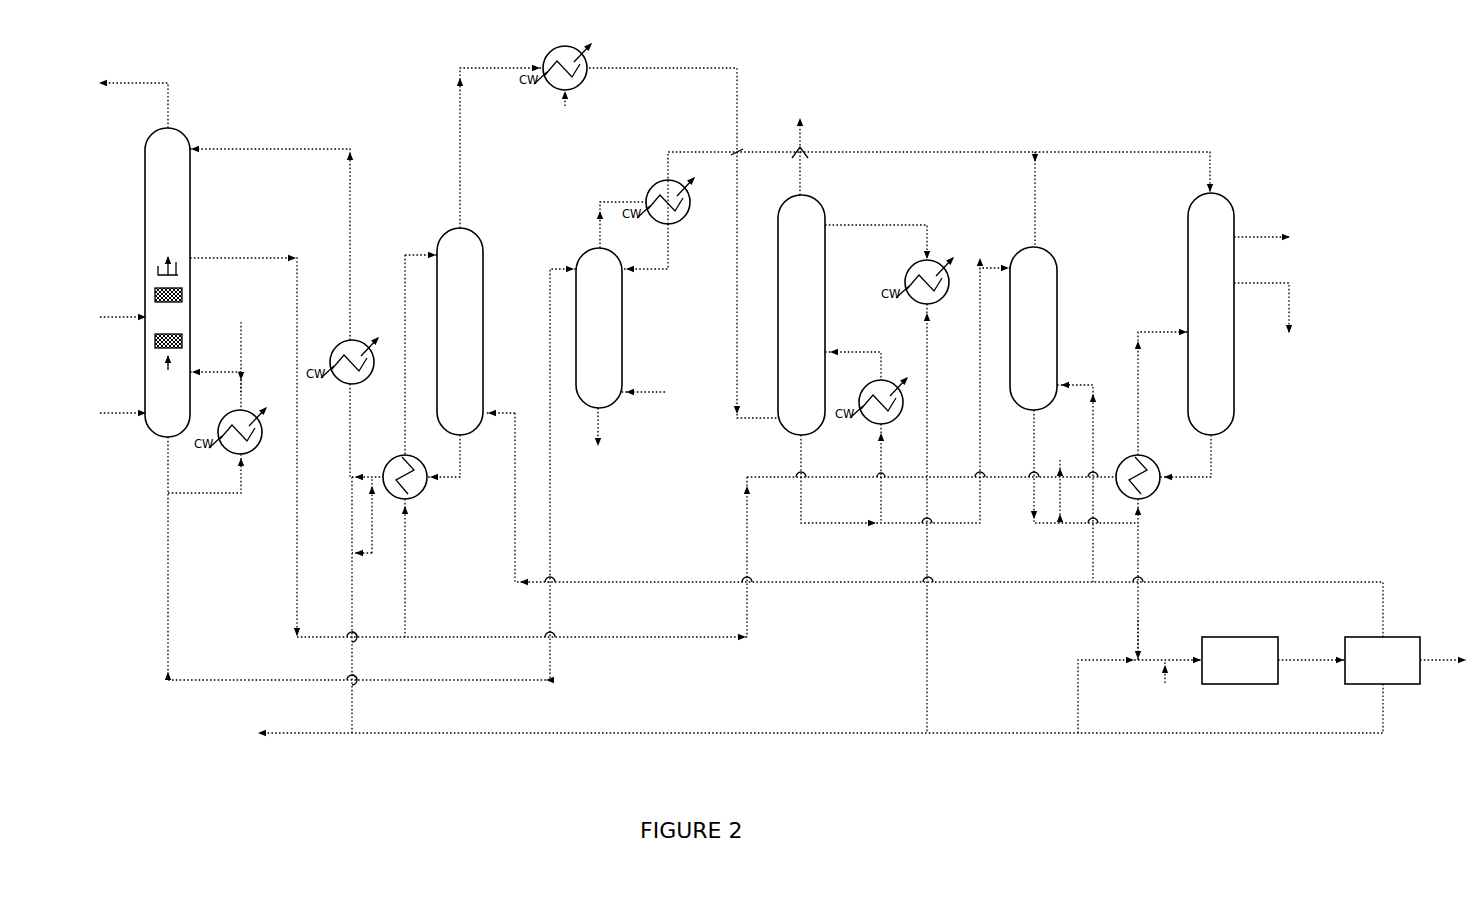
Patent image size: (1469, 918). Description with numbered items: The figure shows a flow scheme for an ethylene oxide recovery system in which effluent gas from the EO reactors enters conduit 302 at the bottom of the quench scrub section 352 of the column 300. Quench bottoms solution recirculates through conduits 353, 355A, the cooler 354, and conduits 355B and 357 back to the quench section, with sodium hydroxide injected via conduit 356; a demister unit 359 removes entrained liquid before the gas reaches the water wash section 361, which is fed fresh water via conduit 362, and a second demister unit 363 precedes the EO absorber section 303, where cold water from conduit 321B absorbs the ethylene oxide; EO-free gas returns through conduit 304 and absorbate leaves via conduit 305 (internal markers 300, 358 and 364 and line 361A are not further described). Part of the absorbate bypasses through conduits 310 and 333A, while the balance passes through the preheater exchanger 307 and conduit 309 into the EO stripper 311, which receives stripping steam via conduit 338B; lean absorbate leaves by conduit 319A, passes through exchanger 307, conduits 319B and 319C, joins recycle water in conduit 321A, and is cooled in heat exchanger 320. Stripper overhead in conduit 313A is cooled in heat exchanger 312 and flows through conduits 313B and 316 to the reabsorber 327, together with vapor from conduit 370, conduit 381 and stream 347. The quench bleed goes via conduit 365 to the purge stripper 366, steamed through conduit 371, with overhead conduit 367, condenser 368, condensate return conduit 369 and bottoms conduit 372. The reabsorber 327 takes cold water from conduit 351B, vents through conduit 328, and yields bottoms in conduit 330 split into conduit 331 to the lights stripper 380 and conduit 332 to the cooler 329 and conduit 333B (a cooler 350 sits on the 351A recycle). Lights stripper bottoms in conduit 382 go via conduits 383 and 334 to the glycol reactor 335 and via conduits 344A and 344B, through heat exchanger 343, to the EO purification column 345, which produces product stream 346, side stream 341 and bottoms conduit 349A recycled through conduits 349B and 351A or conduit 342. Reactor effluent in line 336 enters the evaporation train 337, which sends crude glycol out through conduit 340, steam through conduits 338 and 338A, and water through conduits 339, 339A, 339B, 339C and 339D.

The column 300 is at (164, 242).
The conduit 302 is at (123, 406).
The EO absorber section 303 is at (167, 282).
The conduit 304 is at (133, 97).
The conduit 305 is at (245, 437).
The EO stripper preheater exchanger 307 is at (424, 460).
The conduit 309 is at (417, 344).
The conduit 310 is at (522, 630).
The EO stripper 311 is at (460, 331).
The heat exchanger 312 is at (560, 100).
The conduit 313A is at (499, 137).
The conduit 313B is at (683, 232).
The conduit 316 is at (718, 323).
The conduit 319A is at (451, 465).
The conduit 319B is at (370, 515).
The conduit 319C is at (421, 568).
The heat exchanger 320 is at (358, 386).
The conduit 321A is at (355, 450).
The conduit 321B is at (271, 234).
The EO reabsorber 327 is at (801, 315).
The conduit 328 is at (796, 149).
The EO reabsorber bottoms recycle cooler 329 is at (873, 380).
The conduit 330 is at (905, 392).
The conduit 331 is at (983, 242).
The conduit 332 is at (885, 484).
The conduit 333A is at (874, 450).
The conduit 333B is at (853, 357).
The conduit 334 is at (1159, 680).
The glycol reactor 335 is at (1240, 660).
The stream 336 is at (1311, 652).
The evaporation train 337 is at (1382, 660).
The conduit 338 is at (1316, 573).
The conduit 338A is at (1080, 475).
The conduit 338B is at (934, 523).
The conduit 339 is at (820, 719).
The conduit 339A is at (1076, 668).
The conduit 339B is at (446, 722).
The conduit 339C is at (368, 541).
The conduit 339D is at (321, 605).
The conduit 340 is at (1443, 652).
The conduit 341 is at (1263, 297).
The conduit 342 is at (939, 615).
The heat exchanger 343 is at (1152, 452).
The conduit 344A is at (1141, 523).
The conduit 344B is at (1155, 383).
The EO purification column 345 is at (1211, 314).
The stream 346 is at (1262, 226).
The stream 347 is at (1124, 163).
The conduit 349A is at (1189, 466).
The conduit 349B is at (1058, 459).
The condenser 350 is at (908, 262).
The conduit 351A is at (936, 374).
The conduit 351B is at (877, 233).
The quench scrub section 352 is at (167, 410).
The conduit 353 is at (157, 444).
The cooler 354 is at (249, 455).
The conduit 355A is at (206, 484).
The conduit 355B is at (262, 376).
The conduit 356 is at (235, 363).
The conduit 357 is at (215, 363).
The column internal flow 358 is at (150, 379).
The demister unit 359 is at (153, 342).
The water wash section 361 is at (168, 317).
The stream 361A is at (917, 143).
The conduit 362 is at (123, 310).
The second demister unit 363 is at (152, 291).
The distributor 364 is at (148, 257).
The conduit 365 is at (370, 474).
The quench bleed stripper 366 is at (599, 328).
The conduit 367 is at (601, 225).
The heat exchanger 368 is at (676, 226).
The conduit 369 is at (645, 258).
The conduit 370 is at (734, 179).
The conduit 371 is at (643, 385).
The conduit 372 is at (595, 435).
The lights stripper 380 is at (1033, 328).
The conduit 381 is at (1044, 199).
The conduit 382 is at (1084, 466).
The conduit 383 is at (1143, 619).